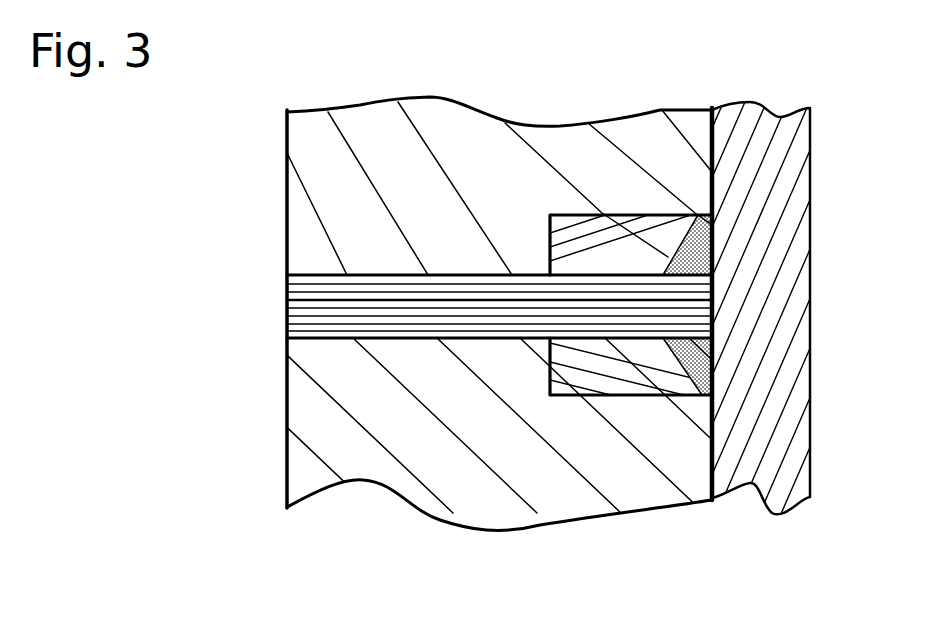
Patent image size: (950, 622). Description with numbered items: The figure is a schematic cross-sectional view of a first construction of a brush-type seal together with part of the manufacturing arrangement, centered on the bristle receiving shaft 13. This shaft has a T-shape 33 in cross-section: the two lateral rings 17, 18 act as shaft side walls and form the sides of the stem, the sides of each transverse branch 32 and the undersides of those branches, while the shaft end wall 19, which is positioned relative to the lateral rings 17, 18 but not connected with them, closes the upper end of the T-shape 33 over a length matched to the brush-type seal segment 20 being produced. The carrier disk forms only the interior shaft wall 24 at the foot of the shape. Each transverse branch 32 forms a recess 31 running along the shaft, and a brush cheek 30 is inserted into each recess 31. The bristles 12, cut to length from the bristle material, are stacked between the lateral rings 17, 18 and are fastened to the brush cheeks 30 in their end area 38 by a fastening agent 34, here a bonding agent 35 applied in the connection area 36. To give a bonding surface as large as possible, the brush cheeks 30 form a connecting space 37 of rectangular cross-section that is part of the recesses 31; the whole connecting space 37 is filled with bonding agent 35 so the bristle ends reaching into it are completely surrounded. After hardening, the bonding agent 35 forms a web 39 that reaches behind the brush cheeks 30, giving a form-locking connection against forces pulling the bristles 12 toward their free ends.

The bristles 12 is at (325, 340).
The bristle receiving shaft 13 is at (452, 252).
The lateral ring 17 is at (300, 480).
The lateral ring 18 is at (363, 118).
The shaft end wall 19 is at (778, 515).
The brush-type seal segment 20 is at (460, 483).
The interior shaft wall 24 is at (297, 295).
The brush cheek 30 is at (560, 252).
The recess 31 is at (648, 225).
The transverse branch 32 is at (582, 228).
The T-shape 33 is at (452, 397).
The fastening agent 34 is at (714, 241).
The bonding agent 35 is at (712, 263).
The connection area 36 is at (744, 312).
The connecting space 37 is at (714, 354).
The end area 38 is at (547, 264).
The web 39 is at (712, 358).